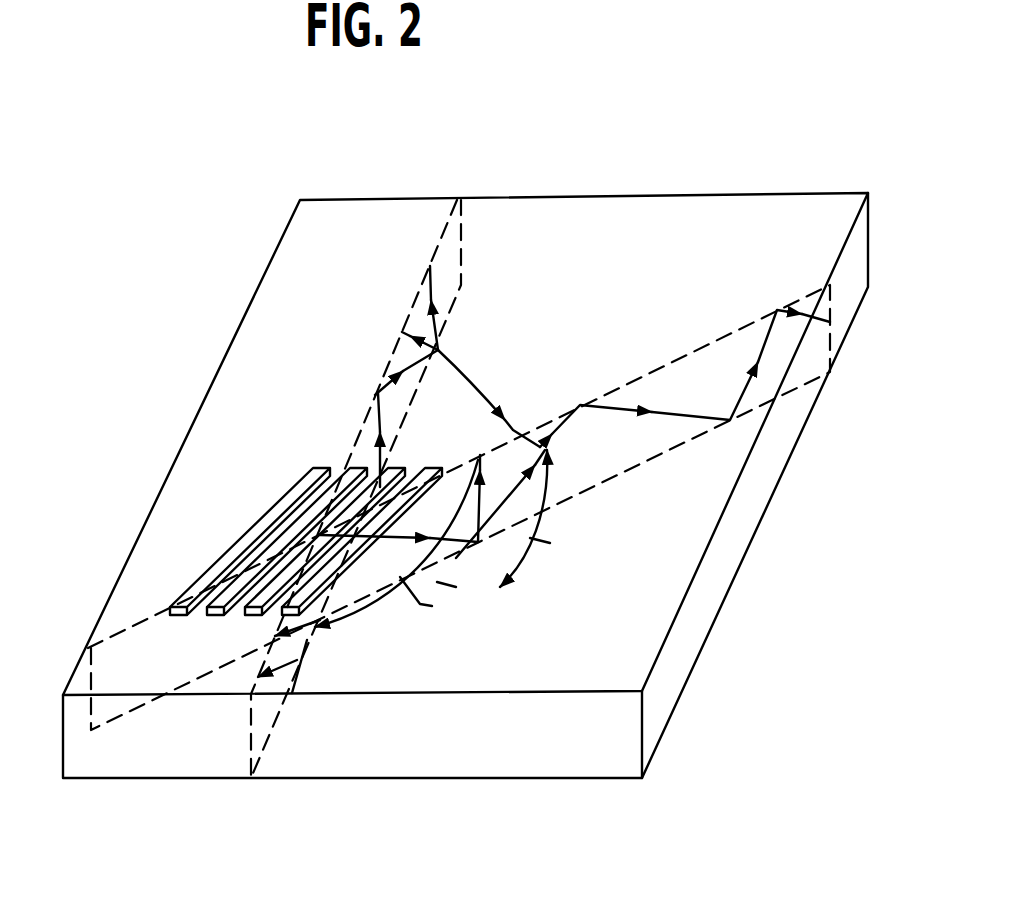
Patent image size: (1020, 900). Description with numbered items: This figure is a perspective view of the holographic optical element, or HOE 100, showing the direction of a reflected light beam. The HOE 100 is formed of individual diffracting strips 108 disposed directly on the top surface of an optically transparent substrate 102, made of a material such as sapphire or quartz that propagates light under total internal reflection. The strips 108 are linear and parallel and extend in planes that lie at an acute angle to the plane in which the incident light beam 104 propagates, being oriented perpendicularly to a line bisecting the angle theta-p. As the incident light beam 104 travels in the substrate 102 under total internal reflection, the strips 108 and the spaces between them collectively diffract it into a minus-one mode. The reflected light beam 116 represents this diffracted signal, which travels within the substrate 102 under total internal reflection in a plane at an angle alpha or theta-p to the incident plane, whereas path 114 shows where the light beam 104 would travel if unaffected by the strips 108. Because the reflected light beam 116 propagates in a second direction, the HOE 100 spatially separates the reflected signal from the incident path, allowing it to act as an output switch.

The holographic optical element (HOE) 100 is at (465, 438).
The substrate 102 is at (688, 678).
The incident light beam 104 is at (363, 543).
The strips 108 is at (293, 488).
The path 114 is at (443, 349).
The reflected light beam 116 is at (631, 407).